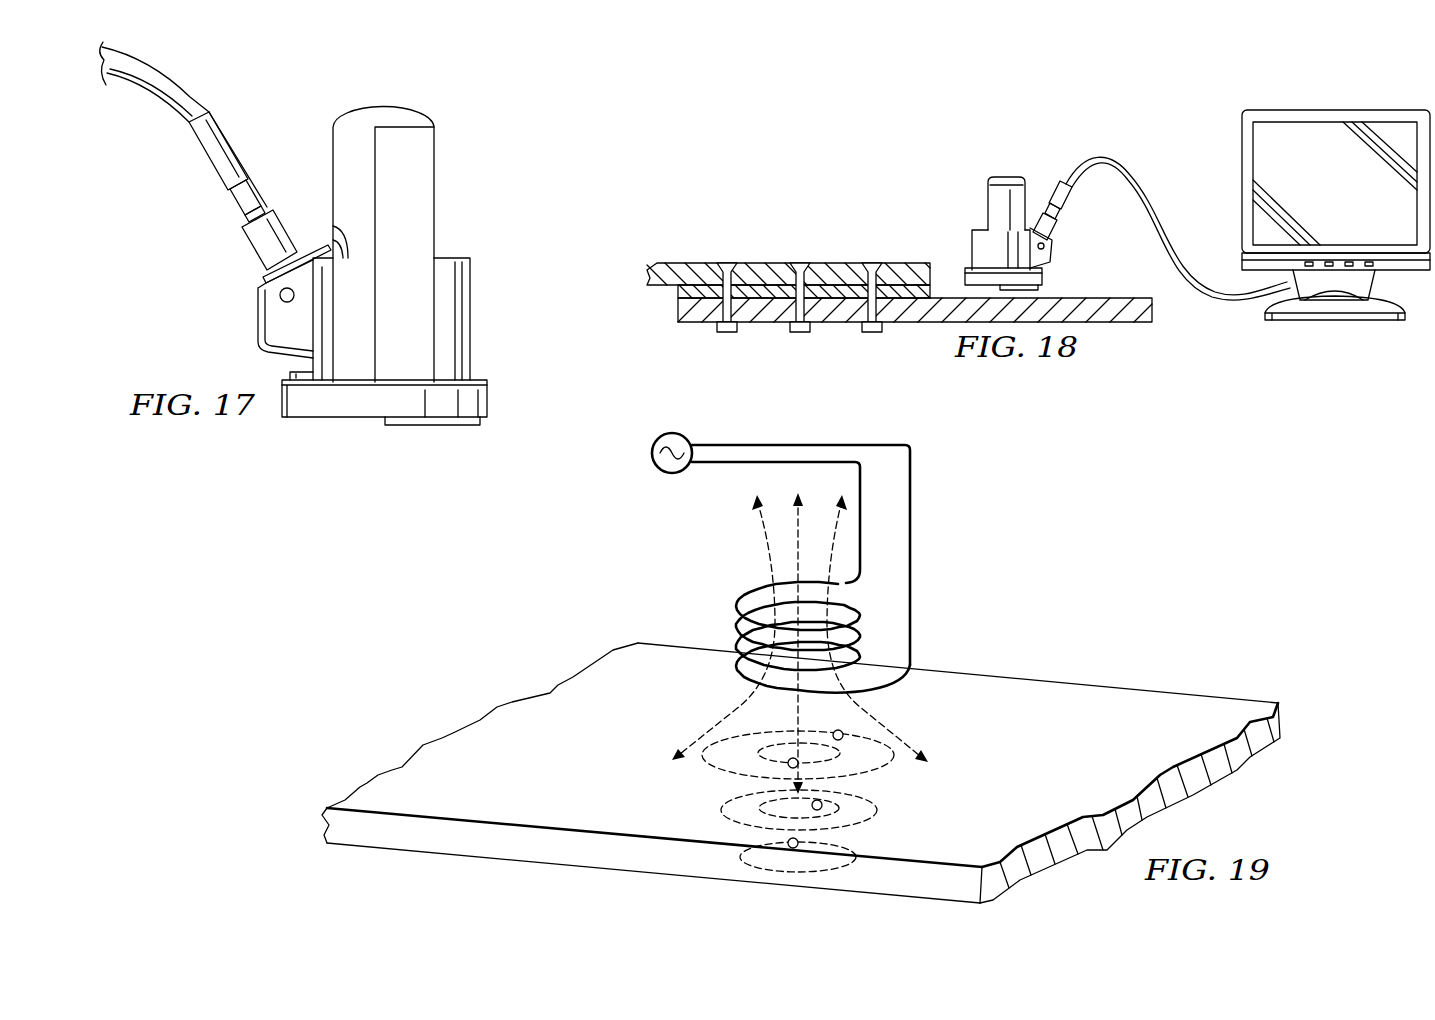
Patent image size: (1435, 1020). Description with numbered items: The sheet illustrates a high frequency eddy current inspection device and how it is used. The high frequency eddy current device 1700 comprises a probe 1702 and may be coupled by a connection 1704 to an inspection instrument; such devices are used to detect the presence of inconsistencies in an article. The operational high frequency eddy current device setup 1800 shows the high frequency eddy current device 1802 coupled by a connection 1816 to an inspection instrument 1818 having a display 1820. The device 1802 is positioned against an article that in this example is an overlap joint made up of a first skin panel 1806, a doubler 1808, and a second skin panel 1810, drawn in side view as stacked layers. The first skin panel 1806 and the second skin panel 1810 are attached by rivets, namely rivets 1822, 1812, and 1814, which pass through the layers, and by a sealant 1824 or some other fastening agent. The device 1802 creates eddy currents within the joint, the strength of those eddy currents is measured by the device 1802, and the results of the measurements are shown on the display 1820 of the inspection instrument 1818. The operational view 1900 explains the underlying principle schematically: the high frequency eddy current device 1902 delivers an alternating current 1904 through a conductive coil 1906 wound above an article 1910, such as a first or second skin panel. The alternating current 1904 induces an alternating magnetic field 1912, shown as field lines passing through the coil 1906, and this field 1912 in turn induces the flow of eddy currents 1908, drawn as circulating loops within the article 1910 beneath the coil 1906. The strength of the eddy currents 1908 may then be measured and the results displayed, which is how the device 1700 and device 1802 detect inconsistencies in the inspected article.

In FIG. 17, the high frequency eddy current device 1700 is at (462, 118).
In FIG. 17, the probe 1702 is at (347, 417).
In FIG. 17, the connection 1704 is at (235, 215).
In FIG. 18, the operational high frequency eddy current device setup 1800 is at (782, 113).
In FIG. 18, the high frequency eddy current device 1802 is at (1002, 177).
In FIG. 18, the first skin panel 1806 is at (647, 277).
In FIG. 18, the doubler 1808 is at (678, 293).
In FIG. 18, the second skin panel 1810 is at (678, 313).
In FIG. 18, the rivet 1812 is at (800, 263).
In FIG. 18, the rivet 1814 is at (872, 263).
In FIG. 18, the connection 1816 is at (1132, 160).
In FIG. 18, the inspection instrument 1818 is at (1333, 108).
In FIG. 18, the display 1820 is at (1393, 133).
In FIG. 18, the rivet 1822 is at (727, 263).
In FIG. 18, the sealant 1824 is at (935, 290).
In FIG. 19, the operational view 1900 is at (1124, 512).
In FIG. 19, the high frequency eddy current device 1902 is at (912, 620).
In FIG. 19, the alternating current 1904 is at (650, 453).
In FIG. 19, the conductive coil 1906 is at (737, 602).
In FIG. 19, the eddy currents 1908 is at (743, 860).
In FIG. 19, the article 1910 is at (572, 782).
In FIG. 19, the alternating magnetic field 1912 is at (717, 732).